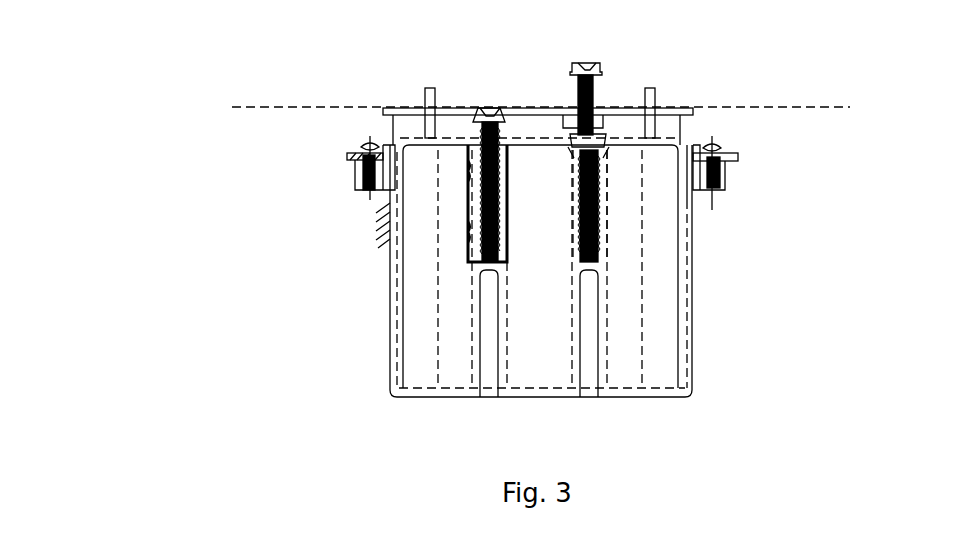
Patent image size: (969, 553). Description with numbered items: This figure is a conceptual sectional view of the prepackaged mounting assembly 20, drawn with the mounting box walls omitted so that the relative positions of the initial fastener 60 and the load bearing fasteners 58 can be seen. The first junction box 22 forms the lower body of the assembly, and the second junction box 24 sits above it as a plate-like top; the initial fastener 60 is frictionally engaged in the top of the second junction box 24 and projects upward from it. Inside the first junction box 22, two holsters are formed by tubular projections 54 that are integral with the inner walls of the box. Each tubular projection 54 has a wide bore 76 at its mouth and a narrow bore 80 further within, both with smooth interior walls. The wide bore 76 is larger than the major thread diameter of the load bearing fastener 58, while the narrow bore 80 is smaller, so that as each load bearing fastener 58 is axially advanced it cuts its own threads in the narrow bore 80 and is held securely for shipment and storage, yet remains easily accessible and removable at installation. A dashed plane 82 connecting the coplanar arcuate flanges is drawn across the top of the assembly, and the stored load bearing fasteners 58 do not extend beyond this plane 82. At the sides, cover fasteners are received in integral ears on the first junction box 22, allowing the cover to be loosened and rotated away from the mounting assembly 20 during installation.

The prepackaged mounting assembly 20 is at (246, 233).
The first junction box 22 is at (390, 277).
The second junction box 24 is at (457, 125).
The tubular projection 54 is at (506, 168).
The load bearing fastener 58 is at (490, 110).
The initial fastener 60 is at (590, 68).
The wide bore 76 is at (473, 160).
The narrow bore 80 is at (473, 221).
The plane 82 is at (811, 107).